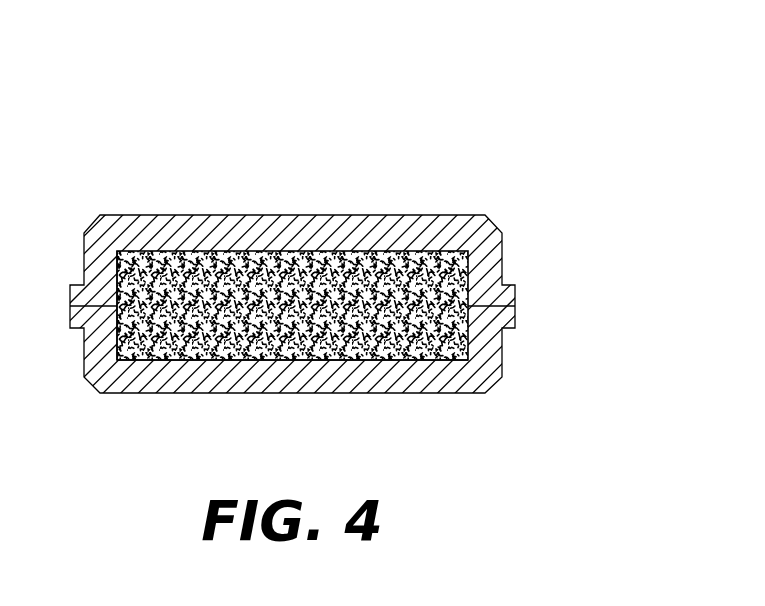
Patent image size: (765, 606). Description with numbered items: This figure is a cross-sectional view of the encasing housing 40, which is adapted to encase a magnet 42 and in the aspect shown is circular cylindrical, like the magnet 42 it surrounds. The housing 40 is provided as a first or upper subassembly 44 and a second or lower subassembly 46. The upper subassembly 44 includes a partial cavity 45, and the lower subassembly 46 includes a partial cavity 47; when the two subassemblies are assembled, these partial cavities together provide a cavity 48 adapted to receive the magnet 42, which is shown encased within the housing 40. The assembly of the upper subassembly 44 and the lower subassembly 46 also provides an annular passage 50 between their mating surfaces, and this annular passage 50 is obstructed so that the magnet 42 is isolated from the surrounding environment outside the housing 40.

The encasing housing 40 is at (297, 133).
The magnet 42 is at (278, 248).
The upper subassembly 44 is at (399, 232).
The partial cavity 45 is at (120, 270).
The lower subassembly 46 is at (286, 377).
The partial cavity 47 is at (118, 333).
The cavity 48 is at (412, 362).
The annular passage 50 is at (538, 306).